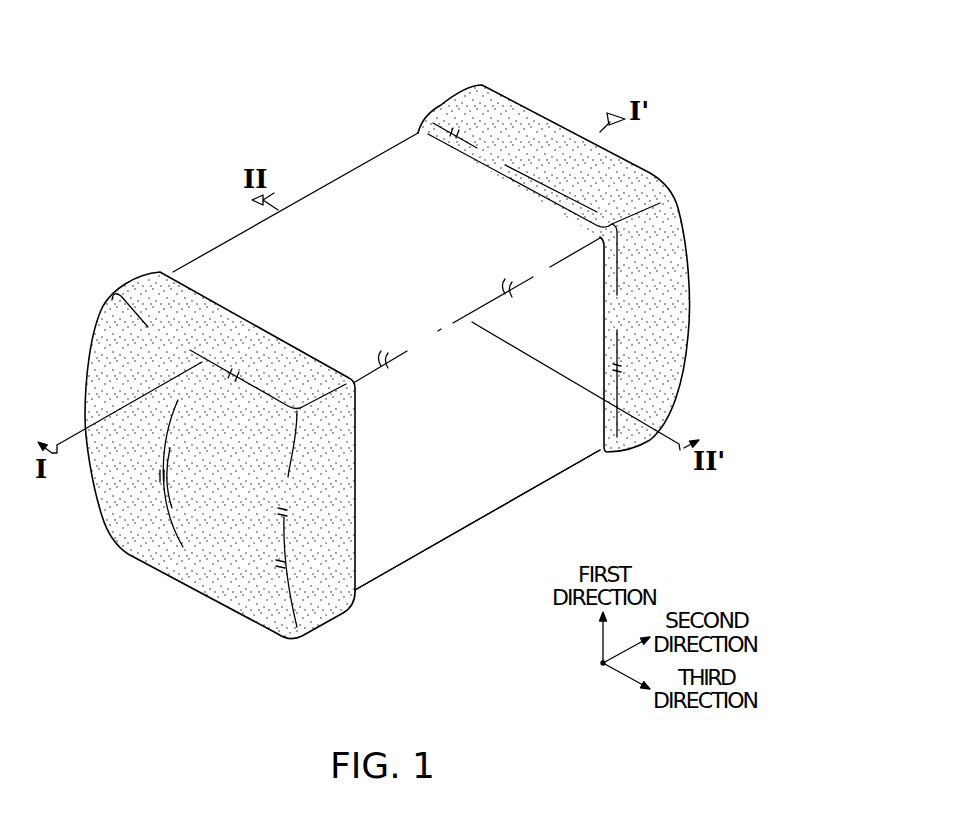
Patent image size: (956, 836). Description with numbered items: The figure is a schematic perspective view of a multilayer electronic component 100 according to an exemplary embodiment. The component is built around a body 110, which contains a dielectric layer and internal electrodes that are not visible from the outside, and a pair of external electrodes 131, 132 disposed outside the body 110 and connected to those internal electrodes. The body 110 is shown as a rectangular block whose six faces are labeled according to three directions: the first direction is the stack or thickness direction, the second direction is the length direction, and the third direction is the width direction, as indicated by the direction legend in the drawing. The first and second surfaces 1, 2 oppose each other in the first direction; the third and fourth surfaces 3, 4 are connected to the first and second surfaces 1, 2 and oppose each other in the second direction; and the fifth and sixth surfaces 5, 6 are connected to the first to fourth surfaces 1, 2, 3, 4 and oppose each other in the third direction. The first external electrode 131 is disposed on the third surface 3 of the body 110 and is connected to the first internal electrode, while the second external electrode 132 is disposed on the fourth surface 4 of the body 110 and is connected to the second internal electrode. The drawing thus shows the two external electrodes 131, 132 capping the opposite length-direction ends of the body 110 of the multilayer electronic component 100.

The multilayer electronic component 100 is at (268, 27).
The body 110 is at (328, 200).
The first surface 1 is at (445, 527).
The second surface 2 is at (373, 190).
The third surface 3 is at (152, 534).
The fourth surface 4 is at (543, 133).
The fifth surface 5 is at (220, 244).
The sixth surface 6 is at (500, 468).
The first external electrode 131 is at (138, 283).
The second external electrode 132 is at (462, 90).